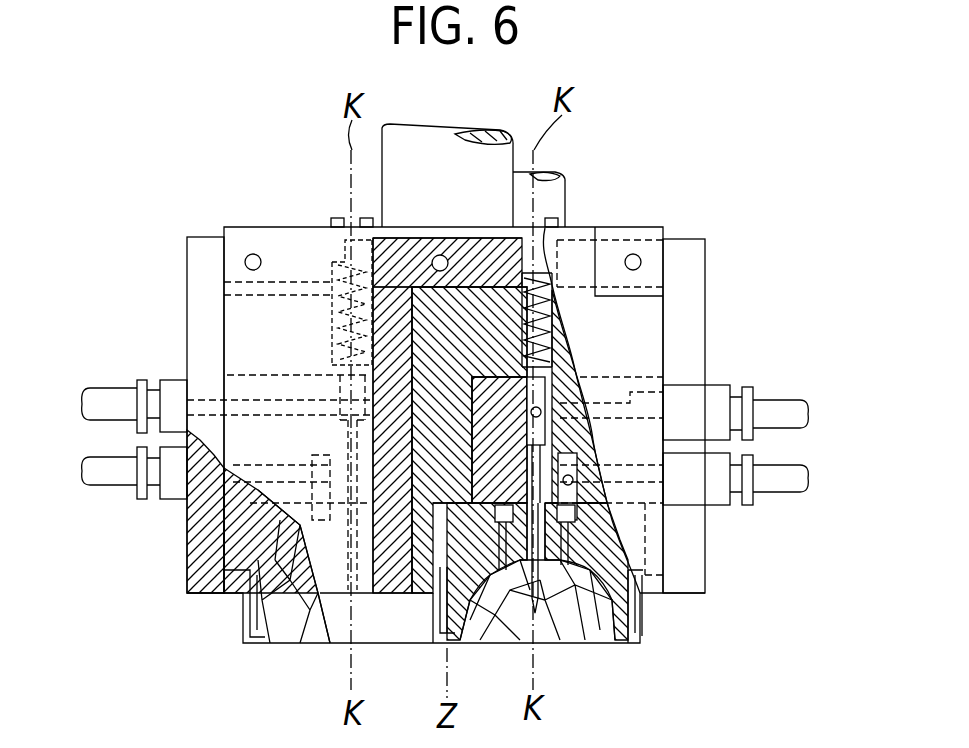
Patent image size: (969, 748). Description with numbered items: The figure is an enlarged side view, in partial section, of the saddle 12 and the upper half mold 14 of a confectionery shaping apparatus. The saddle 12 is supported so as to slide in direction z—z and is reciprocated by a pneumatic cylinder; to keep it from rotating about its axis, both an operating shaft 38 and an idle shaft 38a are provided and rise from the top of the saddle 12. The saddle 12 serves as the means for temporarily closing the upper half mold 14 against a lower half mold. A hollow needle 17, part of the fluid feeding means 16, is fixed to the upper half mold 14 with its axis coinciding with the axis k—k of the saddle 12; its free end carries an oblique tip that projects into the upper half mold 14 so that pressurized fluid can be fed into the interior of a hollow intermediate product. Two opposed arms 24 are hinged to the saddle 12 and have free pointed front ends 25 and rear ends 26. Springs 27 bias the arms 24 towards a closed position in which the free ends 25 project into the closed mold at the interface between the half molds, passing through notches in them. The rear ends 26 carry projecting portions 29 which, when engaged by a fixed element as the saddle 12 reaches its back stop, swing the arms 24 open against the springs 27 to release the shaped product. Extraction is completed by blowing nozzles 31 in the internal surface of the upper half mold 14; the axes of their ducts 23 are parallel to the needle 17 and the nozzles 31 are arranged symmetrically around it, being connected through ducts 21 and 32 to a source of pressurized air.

The saddle 12 is at (226, 312).
The upper half mold 14 is at (420, 600).
The fluid feeding means 16 is at (560, 393).
The hollow needle 17 is at (585, 640).
The duct 21 is at (102, 393).
The nozzle duct 23 is at (570, 463).
The arm 24 is at (201, 245).
The free pointed front end 25 is at (262, 640).
The rear end 26 is at (615, 245).
The spring 27 is at (330, 331).
The projecting portion 29 is at (366, 218).
The blowing nozzle 31 is at (565, 535).
The duct 32 is at (112, 478).
The operating shaft 38 is at (440, 148).
The idle shaft 38a is at (565, 178).